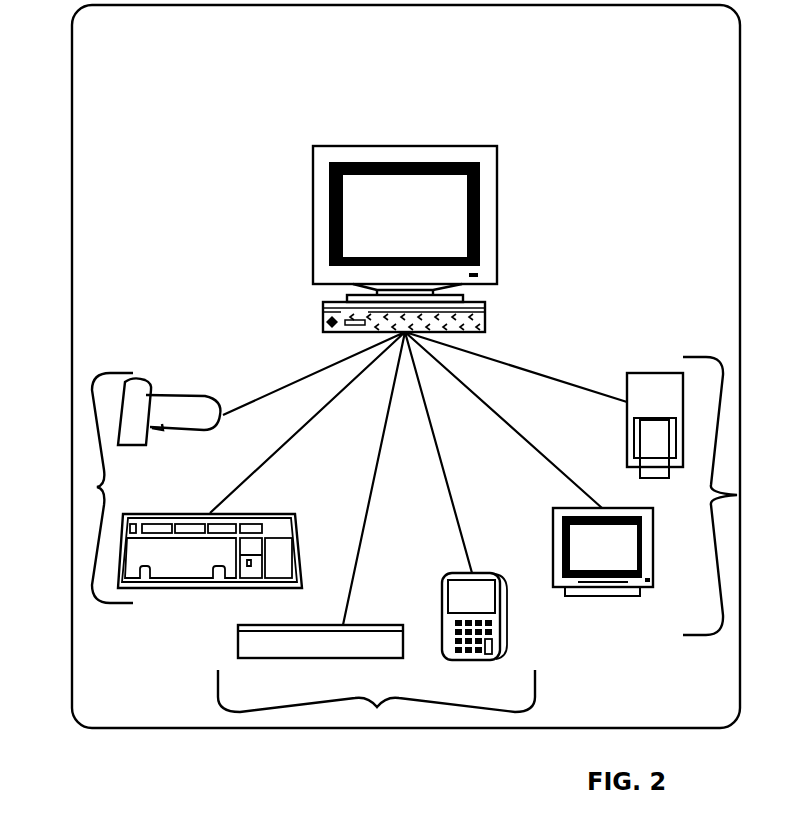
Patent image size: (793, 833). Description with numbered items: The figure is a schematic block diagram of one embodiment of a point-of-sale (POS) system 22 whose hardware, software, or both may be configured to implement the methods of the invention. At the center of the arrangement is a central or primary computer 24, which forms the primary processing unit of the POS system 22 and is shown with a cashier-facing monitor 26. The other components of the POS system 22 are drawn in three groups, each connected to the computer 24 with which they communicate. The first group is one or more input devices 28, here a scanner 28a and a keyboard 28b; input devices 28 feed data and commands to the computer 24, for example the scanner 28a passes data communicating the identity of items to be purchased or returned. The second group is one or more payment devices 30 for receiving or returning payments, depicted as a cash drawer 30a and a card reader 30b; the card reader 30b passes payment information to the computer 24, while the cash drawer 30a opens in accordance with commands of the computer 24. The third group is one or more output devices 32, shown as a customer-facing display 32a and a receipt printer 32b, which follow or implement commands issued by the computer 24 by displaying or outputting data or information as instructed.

The point-of-sale (POS) system 22 is at (405, 63).
The computer 24 is at (510, 294).
The monitor 26 is at (292, 182).
The input devices 28 is at (95, 487).
The scanner 28a is at (182, 412).
The keyboard 28b is at (275, 525).
The payment devices 30 is at (377, 707).
The cash drawer 30a is at (320, 643).
The card reader 30b is at (462, 577).
The output devices 32 is at (740, 495).
The customer-facing display 32a is at (599, 560).
The receipt printer 32b is at (647, 393).